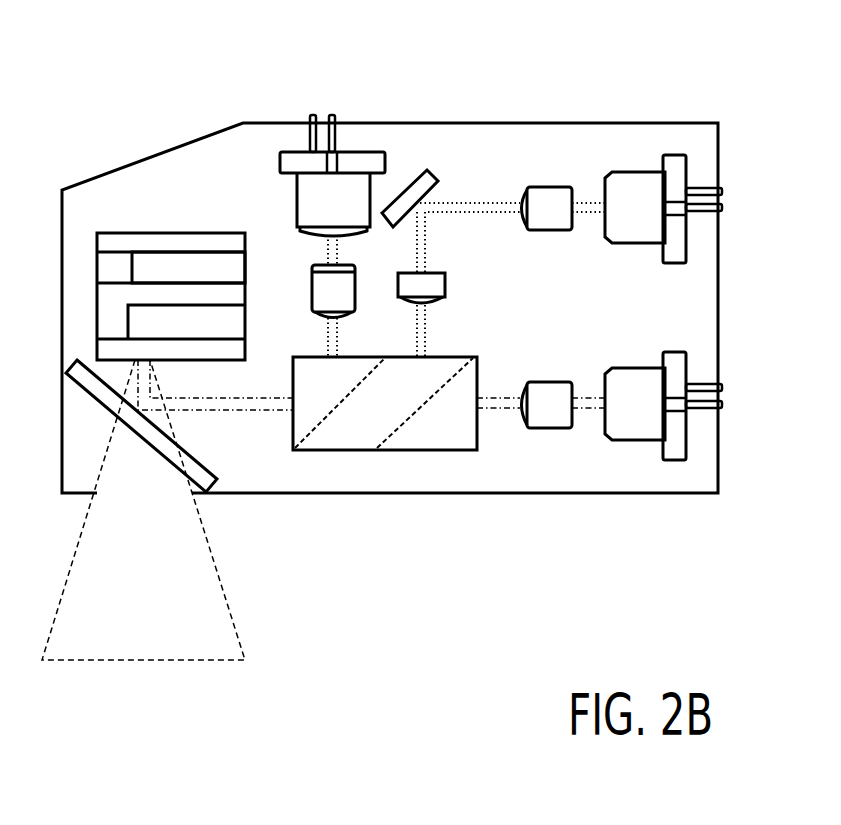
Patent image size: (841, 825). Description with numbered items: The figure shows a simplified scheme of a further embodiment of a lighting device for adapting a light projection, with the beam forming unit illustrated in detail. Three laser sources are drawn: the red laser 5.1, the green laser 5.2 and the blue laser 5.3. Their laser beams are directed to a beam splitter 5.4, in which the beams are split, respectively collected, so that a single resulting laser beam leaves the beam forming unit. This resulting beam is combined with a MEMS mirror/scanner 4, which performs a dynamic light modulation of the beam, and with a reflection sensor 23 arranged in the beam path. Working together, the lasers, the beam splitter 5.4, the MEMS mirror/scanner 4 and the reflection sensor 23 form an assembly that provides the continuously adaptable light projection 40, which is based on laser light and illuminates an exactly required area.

The MEMS mirror/scanner 4 is at (118, 233).
The reflection sensor 23 is at (213, 490).
The continuously adaptable light projection 40 is at (142, 660).
The red laser 5.1 is at (686, 428).
The green laser 5.2 is at (686, 232).
The blue laser 5.3 is at (358, 152).
The beam splitter 5.4 is at (442, 450).